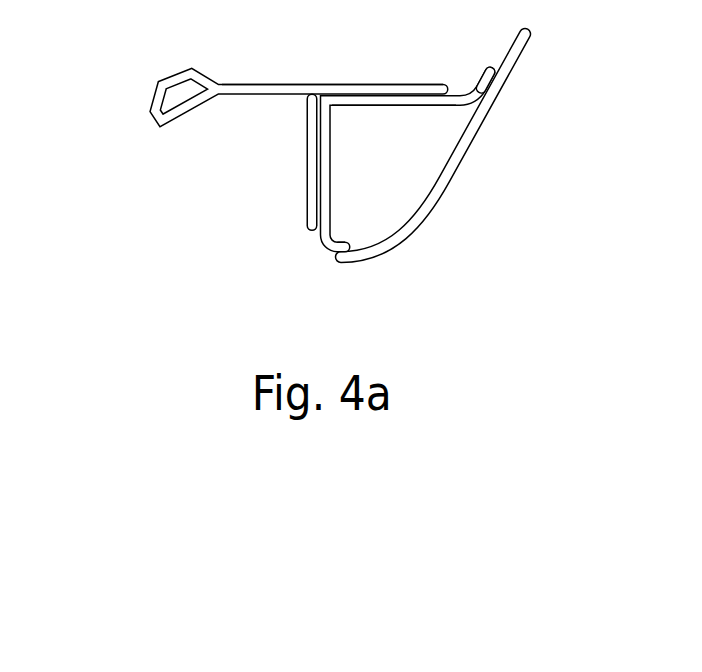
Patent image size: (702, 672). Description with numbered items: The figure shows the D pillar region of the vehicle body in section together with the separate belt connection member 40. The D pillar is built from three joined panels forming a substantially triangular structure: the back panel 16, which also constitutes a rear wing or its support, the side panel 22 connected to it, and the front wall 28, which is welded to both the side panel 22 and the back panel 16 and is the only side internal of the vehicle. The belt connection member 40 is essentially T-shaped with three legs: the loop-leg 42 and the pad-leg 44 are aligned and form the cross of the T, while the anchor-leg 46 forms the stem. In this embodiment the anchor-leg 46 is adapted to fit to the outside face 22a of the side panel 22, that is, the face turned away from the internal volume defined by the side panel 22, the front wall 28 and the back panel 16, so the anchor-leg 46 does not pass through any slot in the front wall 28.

The belt connection member 40 is at (251, 115).
The loop-leg 42 is at (248, 88).
The pad-leg 44 is at (405, 88).
The anchor-leg 46 is at (307, 182).
The side panel 22 is at (354, 157).
The outside face 22a is at (294, 250).
The front wall 28 is at (402, 106).
The back panel 16 is at (435, 200).